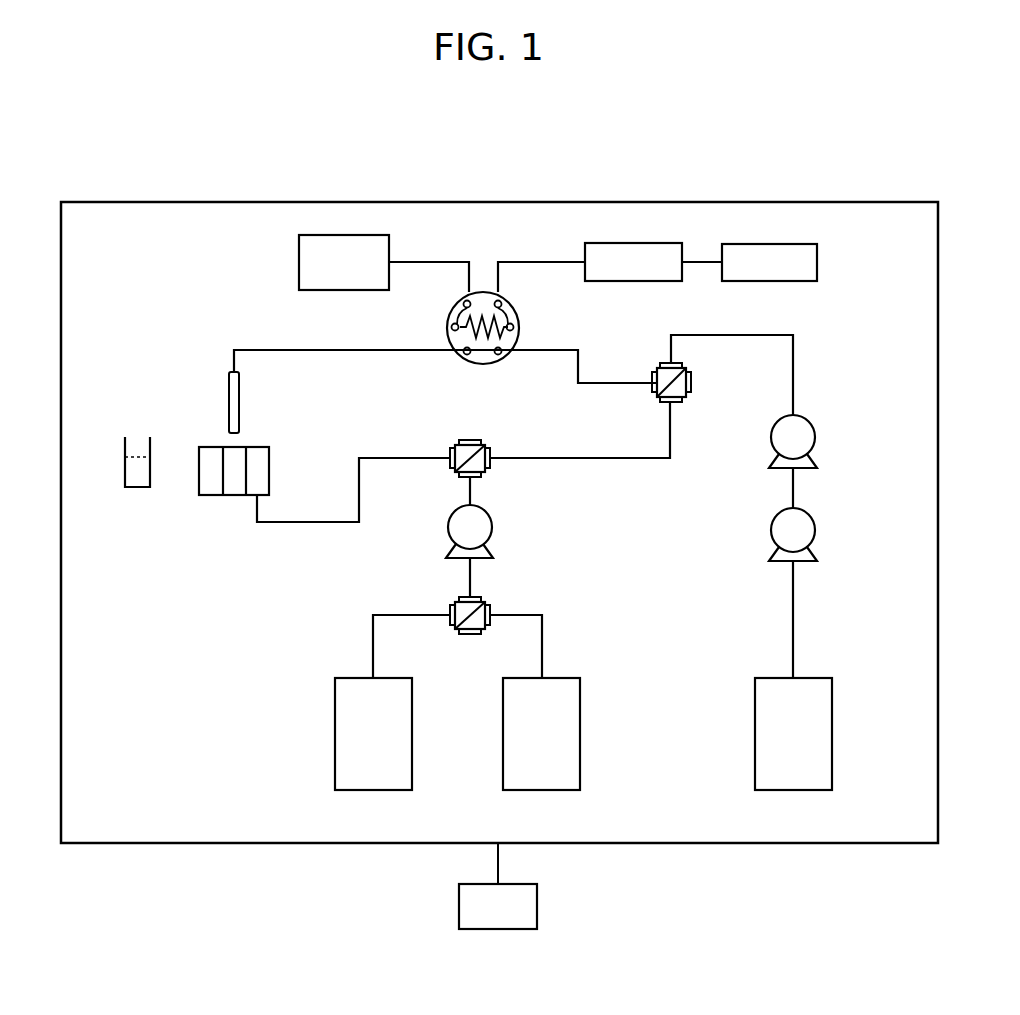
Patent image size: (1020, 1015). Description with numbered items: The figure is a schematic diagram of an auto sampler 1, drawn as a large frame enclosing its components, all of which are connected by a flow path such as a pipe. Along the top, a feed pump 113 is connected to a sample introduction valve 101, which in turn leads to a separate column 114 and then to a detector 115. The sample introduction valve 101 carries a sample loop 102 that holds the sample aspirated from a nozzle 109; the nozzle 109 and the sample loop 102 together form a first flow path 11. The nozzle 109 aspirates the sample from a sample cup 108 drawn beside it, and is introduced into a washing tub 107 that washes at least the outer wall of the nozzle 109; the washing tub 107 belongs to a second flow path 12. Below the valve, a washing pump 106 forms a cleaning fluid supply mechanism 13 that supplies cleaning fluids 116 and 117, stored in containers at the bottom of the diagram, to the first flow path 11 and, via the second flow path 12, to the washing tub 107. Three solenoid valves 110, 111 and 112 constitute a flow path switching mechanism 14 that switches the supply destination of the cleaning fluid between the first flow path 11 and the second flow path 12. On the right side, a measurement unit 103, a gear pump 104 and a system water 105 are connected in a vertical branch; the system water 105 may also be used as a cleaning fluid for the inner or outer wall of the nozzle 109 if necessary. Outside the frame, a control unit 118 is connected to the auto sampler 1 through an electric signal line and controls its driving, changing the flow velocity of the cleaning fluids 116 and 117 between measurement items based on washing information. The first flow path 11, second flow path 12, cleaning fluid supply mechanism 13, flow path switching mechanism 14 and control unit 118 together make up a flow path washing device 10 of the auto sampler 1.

The auto sampler 1 is at (207, 202).
The flow path washing device 10 is at (489, 485).
The first flow path 11 is at (268, 349).
The second flow path 12 is at (312, 550).
The cleaning fluid supply mechanism 13 is at (686, 482).
The flow path switching mechanism 14 is at (524, 498).
The sample introduction valve 101 is at (453, 328).
The sample loop 102 is at (397, 328).
The measurement unit 103 is at (817, 433).
The gear pump 104 is at (817, 526).
The system water 105 is at (761, 790).
The washing pump 106 is at (494, 525).
The washing tub 107 is at (236, 498).
The sample cup 108 is at (123, 488).
The nozzle 109 is at (229, 400).
The solenoid valve 110 is at (455, 445).
The solenoid valve 111 is at (656, 398).
The solenoid valve 112 is at (455, 603).
The feed pump 113 is at (298, 255).
The separate column 114 is at (648, 243).
The detector 115 is at (773, 243).
The cleaning fluid 116 is at (338, 792).
The cleaning fluid 117 is at (510, 790).
The control unit 118 is at (460, 905).